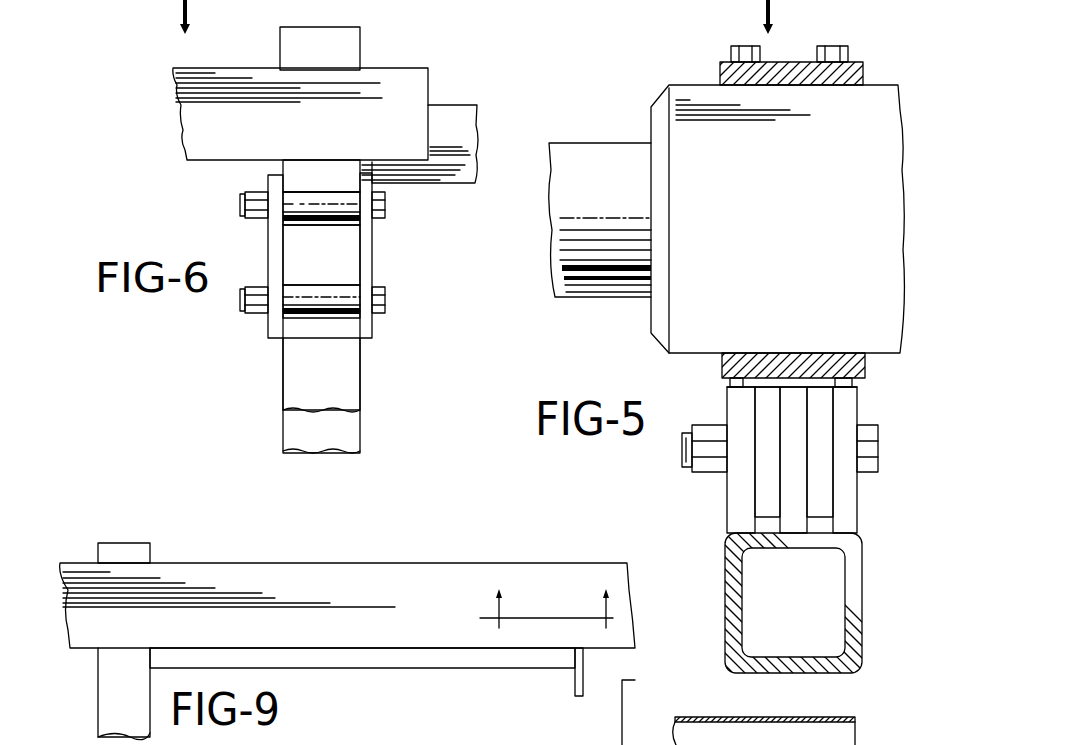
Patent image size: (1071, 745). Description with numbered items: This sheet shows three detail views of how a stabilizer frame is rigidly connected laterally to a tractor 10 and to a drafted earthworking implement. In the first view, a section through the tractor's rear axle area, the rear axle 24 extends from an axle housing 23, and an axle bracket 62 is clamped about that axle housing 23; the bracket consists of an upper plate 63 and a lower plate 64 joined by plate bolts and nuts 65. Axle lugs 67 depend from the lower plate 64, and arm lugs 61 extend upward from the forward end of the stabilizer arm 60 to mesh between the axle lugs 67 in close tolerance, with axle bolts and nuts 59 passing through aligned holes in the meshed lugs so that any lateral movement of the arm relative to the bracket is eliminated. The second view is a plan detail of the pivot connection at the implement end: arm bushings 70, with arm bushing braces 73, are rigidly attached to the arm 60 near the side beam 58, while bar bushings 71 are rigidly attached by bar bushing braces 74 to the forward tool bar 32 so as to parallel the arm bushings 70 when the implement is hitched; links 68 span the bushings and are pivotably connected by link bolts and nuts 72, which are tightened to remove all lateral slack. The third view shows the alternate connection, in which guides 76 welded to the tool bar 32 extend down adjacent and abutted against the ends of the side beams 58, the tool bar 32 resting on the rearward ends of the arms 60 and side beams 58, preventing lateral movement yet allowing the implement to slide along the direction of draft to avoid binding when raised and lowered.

In FIG. 9, the tractor 10 is at (546, 619).
In FIG. 5, the axle housings 23 is at (688, 97).
In FIG. 5, the rear axles 24 is at (597, 160).
In FIG. 6, the forward tool bar 32 is at (400, 78).
In FIG. 5, the forward tool bar 32 is at (840, 740).
In FIG. 9, the forward tool bar 32 is at (355, 580).
In FIG. 6, the side beams 58 is at (455, 110).
In FIG. 9, the side beams 58 is at (525, 660).
In FIG. 5, the axle bolts and nuts 59 is at (702, 410).
In FIG. 6, the stabilizer arms 60 is at (350, 32).
In FIG. 5, the stabilizer arms 60 is at (727, 590).
In FIG. 9, the stabilizer arms 60 is at (130, 556).
In FIG. 5, the arm lugs 61 is at (738, 498).
In FIG. 5, the axle brackets 62 is at (703, 368).
In FIG. 5, the upper plate 63 is at (863, 74).
In FIG. 5, the lower plate 64 is at (850, 367).
In FIG. 5, the plate bolts and nuts 65 is at (742, 52).
In FIG. 5, the axle lugs 67 is at (768, 430).
In FIG. 6, the links 68 is at (268, 266).
In FIG. 6, the arm bushings 70 is at (318, 292).
In FIG. 6, the bar bushings 71 is at (297, 195).
In FIG. 6, the link bolts and nuts 72 is at (385, 208).
In FIG. 6, the arm bushing braces 73 is at (345, 375).
In FIG. 6, the bar bushing braces 74 is at (306, 172).
In FIG. 9, the guides 76 is at (585, 690).